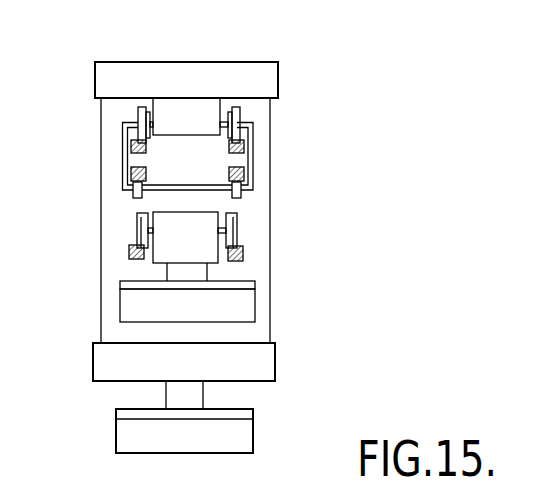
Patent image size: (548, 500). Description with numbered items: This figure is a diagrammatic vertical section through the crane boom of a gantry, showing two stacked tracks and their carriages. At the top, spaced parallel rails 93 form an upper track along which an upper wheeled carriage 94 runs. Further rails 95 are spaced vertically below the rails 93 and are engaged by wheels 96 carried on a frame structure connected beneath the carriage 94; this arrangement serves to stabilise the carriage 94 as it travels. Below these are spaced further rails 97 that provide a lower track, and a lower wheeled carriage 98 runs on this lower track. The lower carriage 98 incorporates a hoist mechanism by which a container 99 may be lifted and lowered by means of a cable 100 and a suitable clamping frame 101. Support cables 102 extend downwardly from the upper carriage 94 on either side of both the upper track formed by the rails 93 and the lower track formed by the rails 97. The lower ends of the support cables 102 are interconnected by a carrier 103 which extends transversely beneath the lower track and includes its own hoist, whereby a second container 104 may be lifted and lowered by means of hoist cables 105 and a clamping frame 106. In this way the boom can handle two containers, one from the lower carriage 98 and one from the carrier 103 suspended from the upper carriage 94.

The rails 93 is at (125, 143).
The upper wheeled carriage 94 is at (258, 73).
The further rails 95 is at (125, 175).
The wheels 96 is at (128, 193).
The further rails 97 is at (128, 255).
The lower wheeled carriage 98 is at (202, 253).
The container 99 is at (237, 306).
The cable 100 is at (167, 270).
The clamping frame 101 is at (232, 282).
The support cables 102 is at (101, 118).
The carrier 103 is at (247, 365).
The container 104 is at (235, 438).
The hoist cables 105 is at (165, 393).
The clamping frame 106 is at (183, 412).